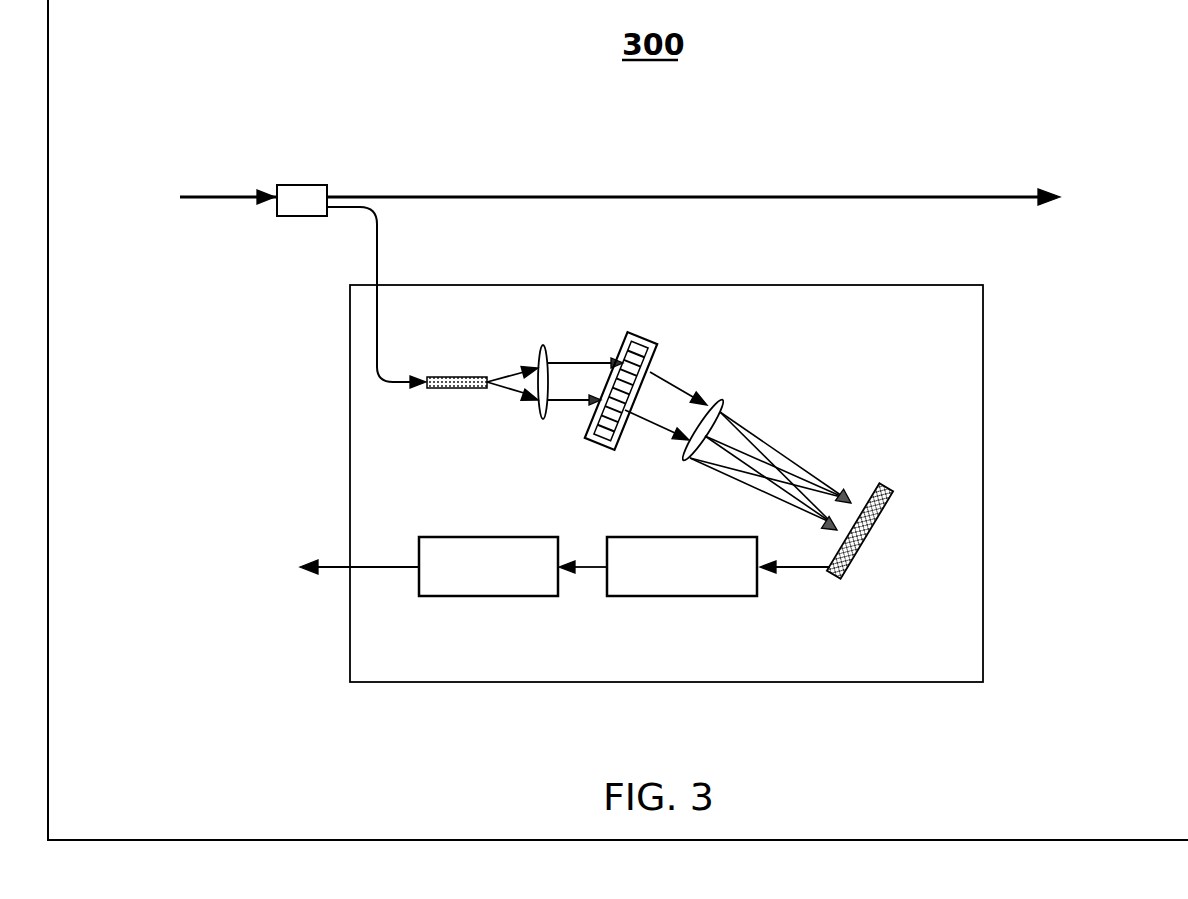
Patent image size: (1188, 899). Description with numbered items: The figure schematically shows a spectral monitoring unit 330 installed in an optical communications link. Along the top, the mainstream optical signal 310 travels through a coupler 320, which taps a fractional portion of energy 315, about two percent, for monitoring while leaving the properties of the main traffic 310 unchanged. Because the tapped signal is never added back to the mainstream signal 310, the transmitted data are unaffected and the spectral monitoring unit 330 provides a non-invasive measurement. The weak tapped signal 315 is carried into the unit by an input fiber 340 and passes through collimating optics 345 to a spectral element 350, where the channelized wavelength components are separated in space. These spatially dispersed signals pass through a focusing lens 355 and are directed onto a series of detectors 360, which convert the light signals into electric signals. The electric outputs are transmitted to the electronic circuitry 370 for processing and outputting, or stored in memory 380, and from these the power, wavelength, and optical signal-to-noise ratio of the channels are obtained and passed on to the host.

The mainstream optical signal 310 is at (768, 194).
The tapped energy 315 is at (377, 251).
The coupler 320 is at (306, 197).
The spectral monitoring unit 330 is at (958, 347).
The input fiber 340 is at (457, 385).
The collimating optics 345 is at (537, 409).
The spectral element 350 is at (655, 350).
The focusing lens 355 is at (722, 403).
The detectors 360 is at (860, 548).
The electronic circuitry 370 is at (677, 572).
The memory 380 is at (477, 573).